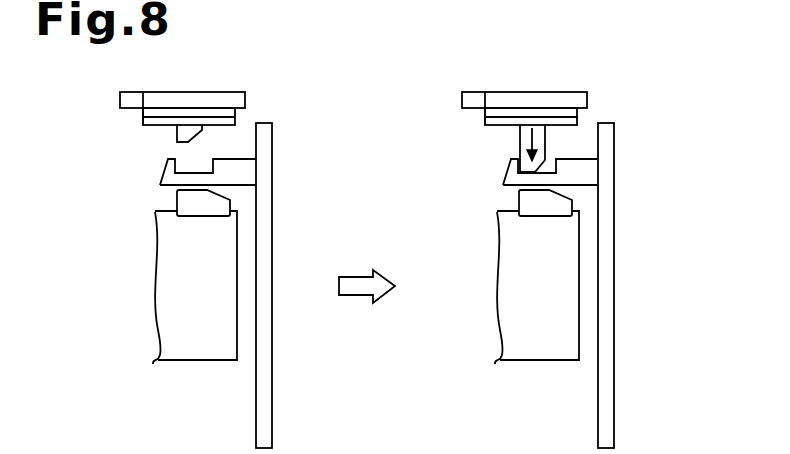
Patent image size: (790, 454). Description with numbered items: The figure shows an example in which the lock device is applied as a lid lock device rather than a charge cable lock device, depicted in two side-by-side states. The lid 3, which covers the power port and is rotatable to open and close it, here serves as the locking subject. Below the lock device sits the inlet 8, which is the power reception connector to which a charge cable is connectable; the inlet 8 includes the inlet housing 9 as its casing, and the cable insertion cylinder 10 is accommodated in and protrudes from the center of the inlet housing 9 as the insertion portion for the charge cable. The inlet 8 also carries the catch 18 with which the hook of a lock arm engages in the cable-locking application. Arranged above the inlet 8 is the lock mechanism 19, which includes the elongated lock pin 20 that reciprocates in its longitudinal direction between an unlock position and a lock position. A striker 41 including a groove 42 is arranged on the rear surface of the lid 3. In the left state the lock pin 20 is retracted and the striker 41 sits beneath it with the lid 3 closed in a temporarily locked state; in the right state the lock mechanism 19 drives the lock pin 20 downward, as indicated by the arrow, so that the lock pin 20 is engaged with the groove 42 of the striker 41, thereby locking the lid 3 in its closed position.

The lid 3 is at (272, 408).
The inlet 8 is at (169, 361).
The inlet housing 9 is at (344, 419).
The cable insertion cylinder 10 is at (217, 352).
The catch 18 is at (217, 203).
The lock mechanism 19 is at (190, 92).
The lock pin 20 is at (176, 133).
The striker 41 is at (163, 167).
The groove 42 is at (190, 175).